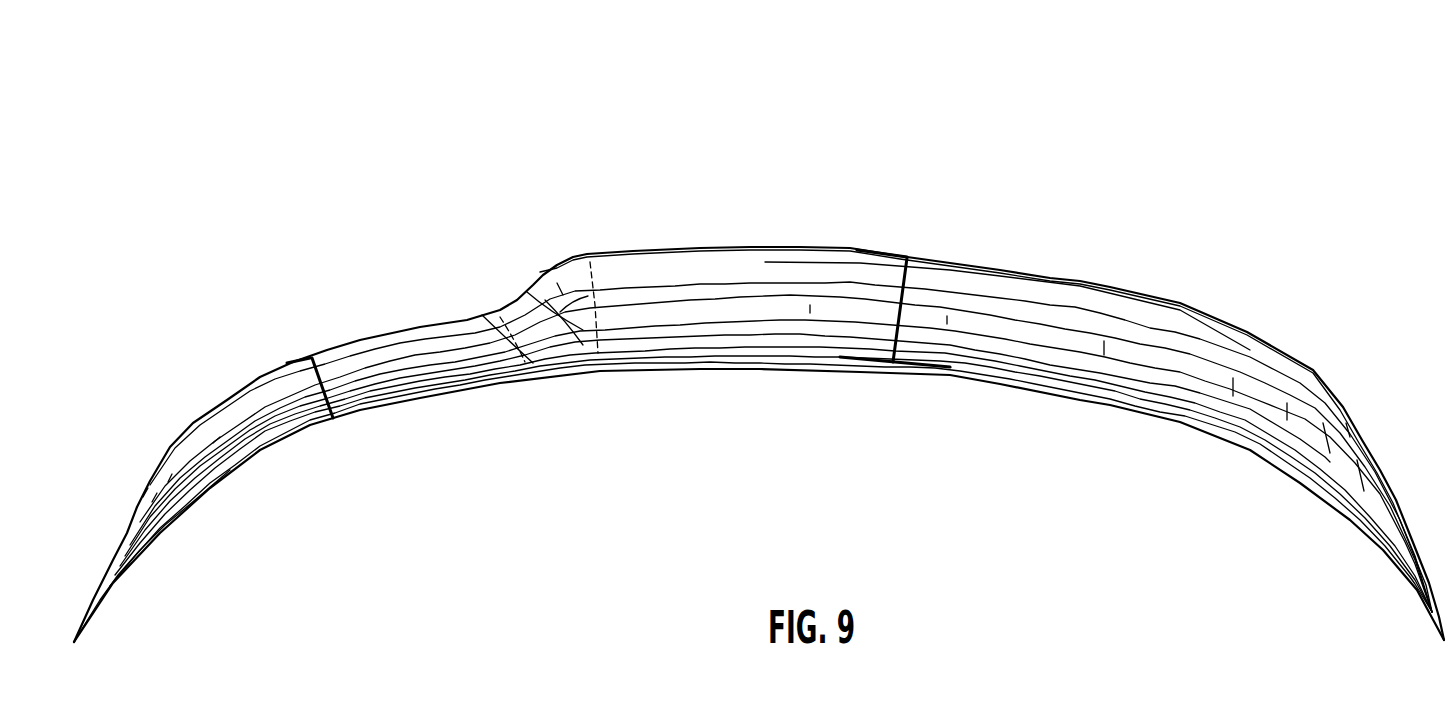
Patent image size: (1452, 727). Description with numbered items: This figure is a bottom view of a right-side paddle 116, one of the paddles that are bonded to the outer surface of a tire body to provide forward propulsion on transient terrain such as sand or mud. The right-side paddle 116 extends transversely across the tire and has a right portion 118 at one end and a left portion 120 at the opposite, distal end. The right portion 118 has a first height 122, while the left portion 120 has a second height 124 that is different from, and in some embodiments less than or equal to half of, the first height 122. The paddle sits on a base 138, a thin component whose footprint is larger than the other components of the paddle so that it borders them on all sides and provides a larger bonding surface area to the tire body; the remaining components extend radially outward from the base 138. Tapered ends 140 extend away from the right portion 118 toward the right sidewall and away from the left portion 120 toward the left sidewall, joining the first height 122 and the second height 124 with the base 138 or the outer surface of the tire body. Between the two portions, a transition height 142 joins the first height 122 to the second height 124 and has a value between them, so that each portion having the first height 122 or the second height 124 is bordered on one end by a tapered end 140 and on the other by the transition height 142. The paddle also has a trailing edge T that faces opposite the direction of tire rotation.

The right-side paddle 116 is at (336, 145).
The right portion 118 is at (1073, 280).
The left portion 120 is at (268, 375).
The first height 122 is at (903, 315).
The second height 124 is at (327, 383).
The base 138 is at (110, 582).
The tapered ends 140 is at (148, 482).
The transition height 142 is at (540, 288).
The trailing edge T is at (973, 375).